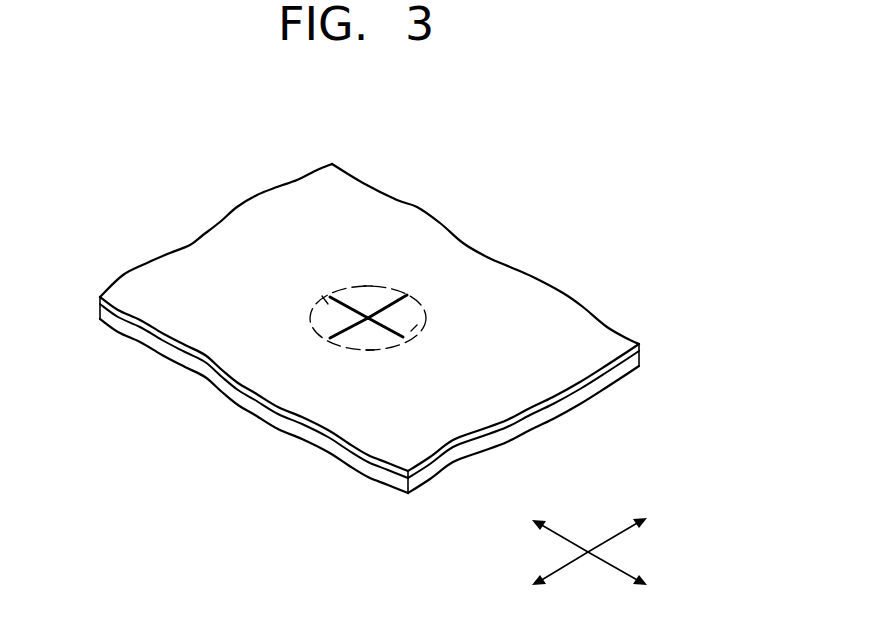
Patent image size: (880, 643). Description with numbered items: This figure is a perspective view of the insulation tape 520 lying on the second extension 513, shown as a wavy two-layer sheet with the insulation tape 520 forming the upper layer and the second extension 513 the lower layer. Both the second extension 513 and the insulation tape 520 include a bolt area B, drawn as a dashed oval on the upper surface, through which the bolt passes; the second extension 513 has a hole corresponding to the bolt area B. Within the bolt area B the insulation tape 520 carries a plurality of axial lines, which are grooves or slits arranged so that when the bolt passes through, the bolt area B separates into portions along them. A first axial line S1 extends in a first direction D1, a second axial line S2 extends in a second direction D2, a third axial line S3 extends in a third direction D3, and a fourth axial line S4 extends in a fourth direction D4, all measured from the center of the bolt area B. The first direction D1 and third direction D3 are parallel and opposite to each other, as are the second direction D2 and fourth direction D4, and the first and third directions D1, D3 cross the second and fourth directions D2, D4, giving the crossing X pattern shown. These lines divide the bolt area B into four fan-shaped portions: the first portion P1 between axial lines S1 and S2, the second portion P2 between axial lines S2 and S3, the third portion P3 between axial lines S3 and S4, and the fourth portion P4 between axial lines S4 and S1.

The insulation tape 520 is at (642, 344).
The second extension 513 is at (633, 363).
The bolt area B is at (423, 302).
The first axial line S1 is at (348, 301).
The second axial line S2 is at (388, 301).
The third axial line S3 is at (386, 340).
The fourth axial line S4 is at (350, 340).
The first portion P1 is at (369, 285).
The second portion P2 is at (413, 328).
The third portion P3 is at (370, 351).
The fourth portion P4 is at (326, 300).
The first direction D1 is at (545, 527).
The second direction D2 is at (631, 527).
The third direction D3 is at (631, 581).
The fourth direction D4 is at (545, 581).